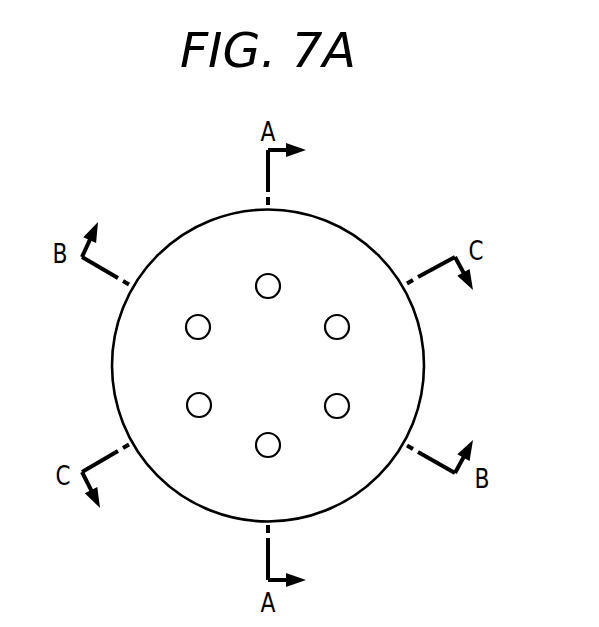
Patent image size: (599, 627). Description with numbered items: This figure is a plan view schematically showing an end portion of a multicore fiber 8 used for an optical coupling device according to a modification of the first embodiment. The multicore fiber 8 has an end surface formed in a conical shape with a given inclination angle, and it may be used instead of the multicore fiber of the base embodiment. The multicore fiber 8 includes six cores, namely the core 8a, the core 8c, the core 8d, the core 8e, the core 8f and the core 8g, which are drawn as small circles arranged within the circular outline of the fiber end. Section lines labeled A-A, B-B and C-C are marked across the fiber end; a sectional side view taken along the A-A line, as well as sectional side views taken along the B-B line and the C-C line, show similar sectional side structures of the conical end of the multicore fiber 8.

The multicore fiber 8 is at (213, 184).
The core 8a is at (280, 280).
The core 8c is at (258, 452).
The core 8d is at (190, 318).
The core 8e is at (190, 398).
The core 8f is at (349, 332).
The core 8g is at (338, 418).